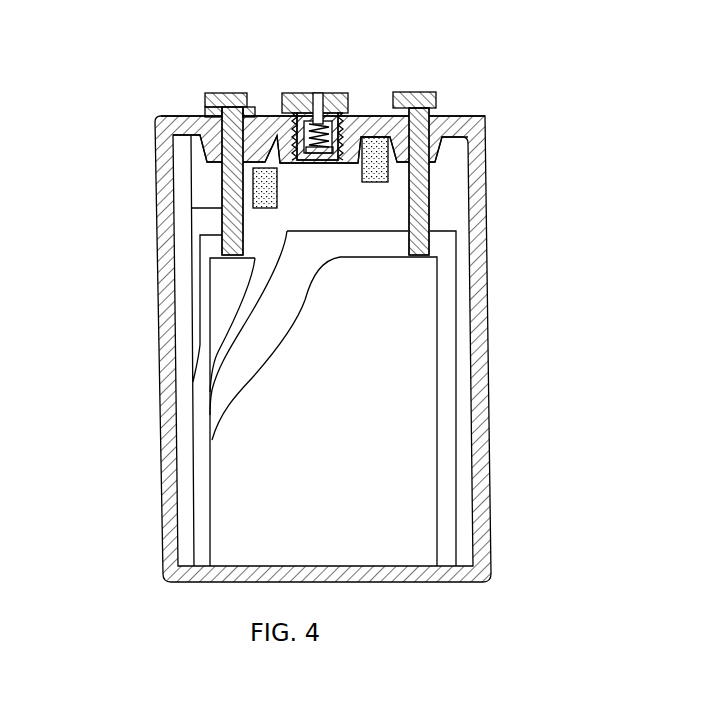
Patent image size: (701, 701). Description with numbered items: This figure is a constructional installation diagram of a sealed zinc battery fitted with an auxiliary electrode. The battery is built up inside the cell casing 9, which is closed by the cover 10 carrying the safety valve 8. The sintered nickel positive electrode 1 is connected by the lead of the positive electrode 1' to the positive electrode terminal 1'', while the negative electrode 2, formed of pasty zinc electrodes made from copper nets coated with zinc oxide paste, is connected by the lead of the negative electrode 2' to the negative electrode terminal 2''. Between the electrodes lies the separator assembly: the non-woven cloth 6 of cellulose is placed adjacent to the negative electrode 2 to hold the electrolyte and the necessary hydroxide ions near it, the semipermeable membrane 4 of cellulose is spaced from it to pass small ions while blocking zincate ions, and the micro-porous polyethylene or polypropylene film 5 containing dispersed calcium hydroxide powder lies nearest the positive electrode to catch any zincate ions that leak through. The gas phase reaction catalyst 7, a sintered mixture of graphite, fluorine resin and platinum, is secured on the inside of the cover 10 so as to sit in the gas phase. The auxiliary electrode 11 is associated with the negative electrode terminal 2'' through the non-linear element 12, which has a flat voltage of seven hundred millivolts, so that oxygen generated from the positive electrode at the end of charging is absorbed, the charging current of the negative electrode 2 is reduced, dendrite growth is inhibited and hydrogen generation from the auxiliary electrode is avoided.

The sintered nickel positive electrode 1 is at (441, 411).
The lead of the positive electrode 1' is at (484, 181).
The positive electrode terminal 1'' is at (446, 58).
The negative electrode 2 is at (172, 395).
The lead of the negative electrode 2' is at (156, 181).
The negative electrode terminal 2'' is at (183, 68).
The semipermeable membrane of cellulose 4 is at (207, 378).
The micro-porous polyethylene or polypropylene film 5 is at (219, 404).
The non-woven cloth of cellulose 6 is at (237, 320).
The gas phase reaction catalyst 7 is at (400, 152).
The safety valve 8 is at (343, 107).
The cell casing 9 is at (485, 531).
The cover 10 is at (472, 125).
The auxiliary electrode 11 is at (260, 188).
The non-linear element 12 is at (243, 122).